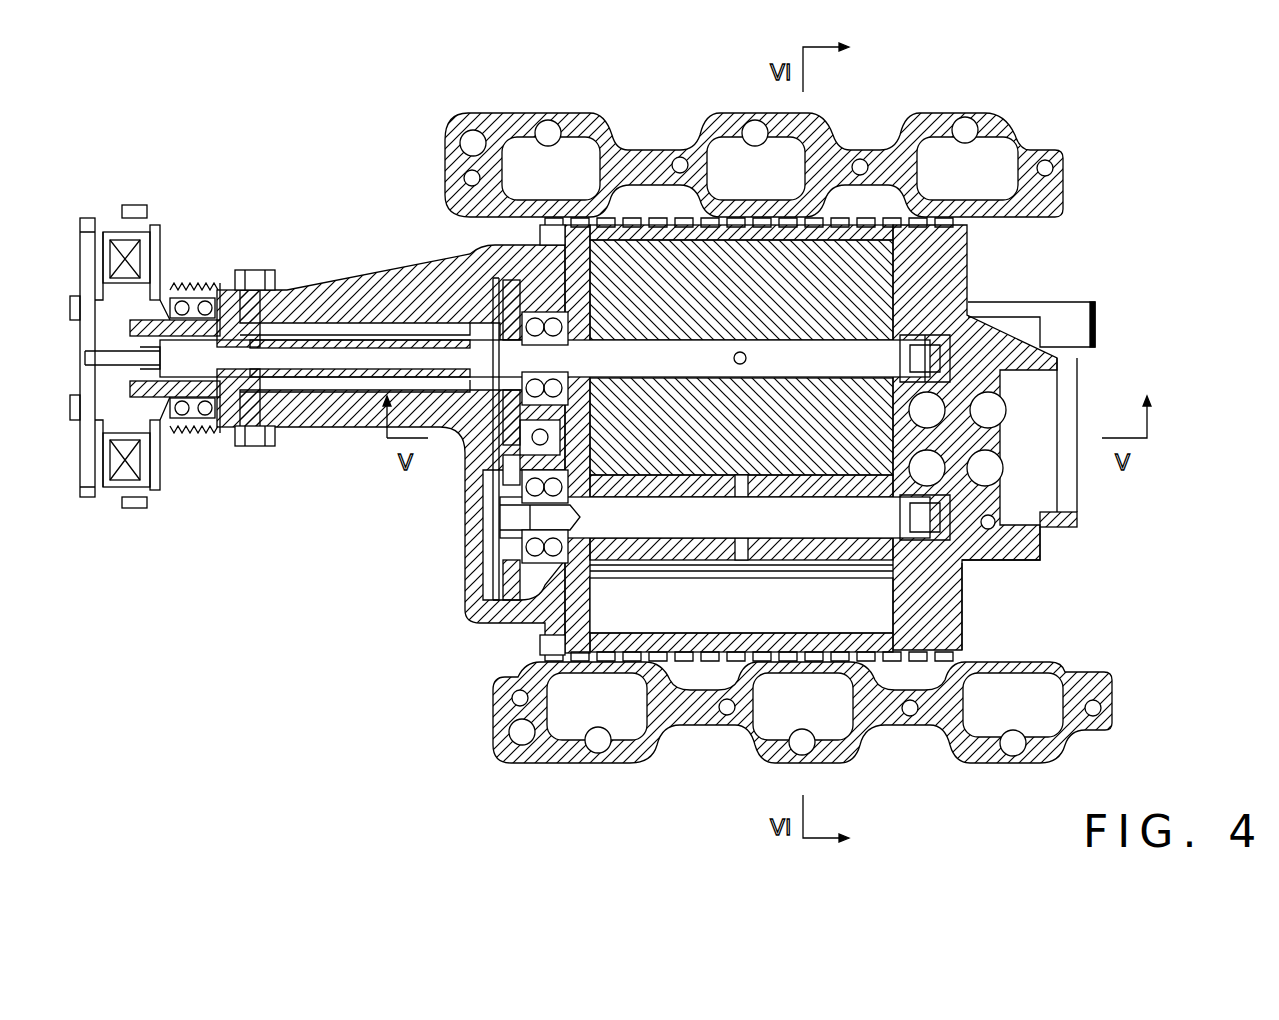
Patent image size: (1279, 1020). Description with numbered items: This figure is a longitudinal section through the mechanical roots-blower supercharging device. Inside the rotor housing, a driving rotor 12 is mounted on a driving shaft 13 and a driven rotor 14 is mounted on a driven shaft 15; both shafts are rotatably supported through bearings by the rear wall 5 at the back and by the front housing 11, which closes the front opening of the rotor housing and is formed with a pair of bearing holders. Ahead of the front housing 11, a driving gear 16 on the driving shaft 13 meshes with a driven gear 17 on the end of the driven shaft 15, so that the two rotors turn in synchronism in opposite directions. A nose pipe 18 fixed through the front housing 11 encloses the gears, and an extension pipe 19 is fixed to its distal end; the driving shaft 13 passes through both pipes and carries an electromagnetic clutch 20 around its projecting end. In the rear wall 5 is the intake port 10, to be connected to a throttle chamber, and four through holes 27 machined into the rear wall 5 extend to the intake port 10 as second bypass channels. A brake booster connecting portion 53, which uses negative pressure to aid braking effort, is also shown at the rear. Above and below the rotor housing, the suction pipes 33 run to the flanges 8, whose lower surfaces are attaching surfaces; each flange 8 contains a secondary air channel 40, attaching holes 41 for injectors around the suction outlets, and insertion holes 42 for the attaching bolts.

The rear wall 5 is at (985, 550).
The flange 8 is at (1060, 195).
The intake port 10 is at (1050, 380).
The front housing 11 is at (520, 625).
The driving rotor 12 is at (865, 265).
The driving shaft 13 is at (815, 355).
The driven rotor 14 is at (663, 575).
The driven shaft 15 is at (790, 525).
The driving gear 16 is at (472, 262).
The driven gear 17 is at (480, 600).
The nose pipe 18 is at (355, 295).
The extension pipe 19 is at (240, 270).
The electromagnetic clutch 20 is at (105, 215).
The through hole 27 is at (930, 410).
The suction pipe 33 is at (592, 120).
The secondary air channel 40 is at (470, 140).
The attaching hole 41 is at (546, 122).
The insertion hole 42 is at (680, 157).
The brake booster connecting portion 53 is at (1068, 305).